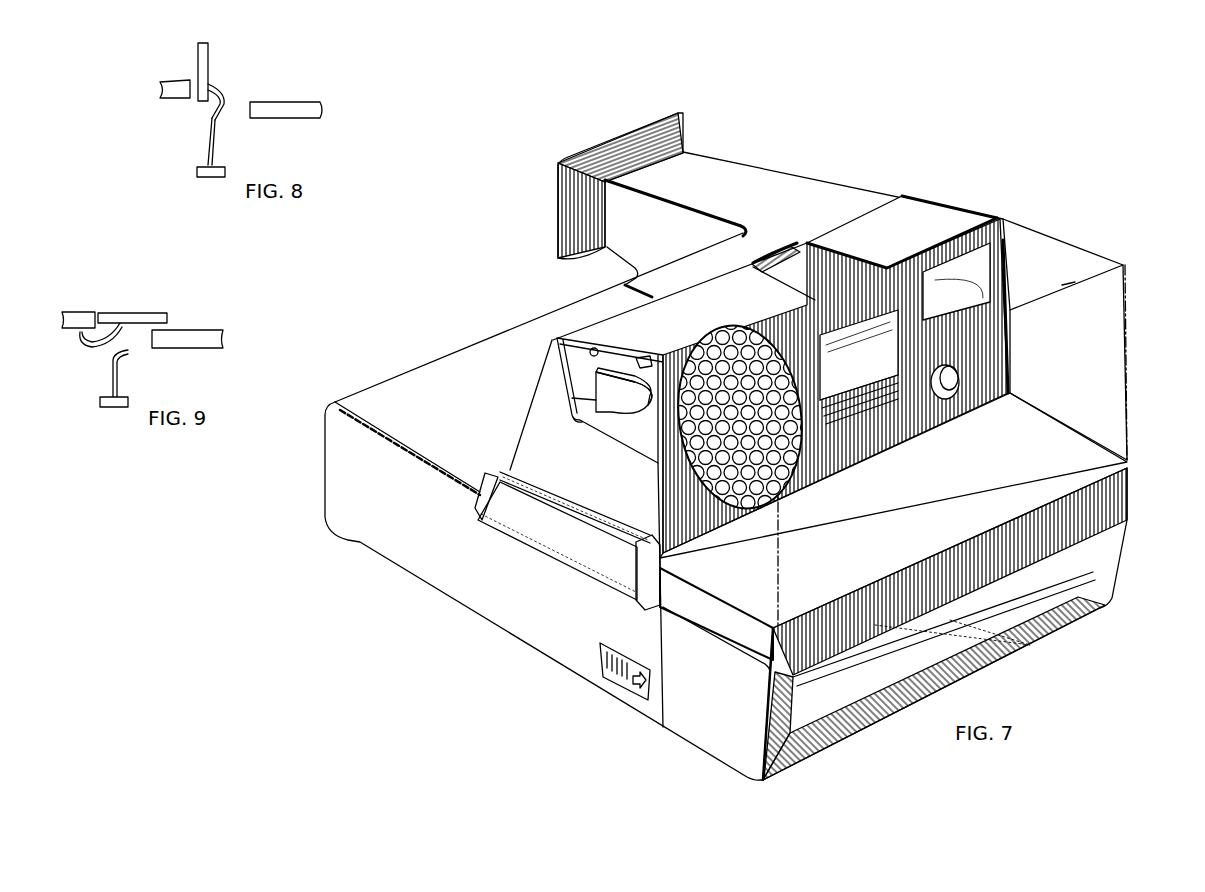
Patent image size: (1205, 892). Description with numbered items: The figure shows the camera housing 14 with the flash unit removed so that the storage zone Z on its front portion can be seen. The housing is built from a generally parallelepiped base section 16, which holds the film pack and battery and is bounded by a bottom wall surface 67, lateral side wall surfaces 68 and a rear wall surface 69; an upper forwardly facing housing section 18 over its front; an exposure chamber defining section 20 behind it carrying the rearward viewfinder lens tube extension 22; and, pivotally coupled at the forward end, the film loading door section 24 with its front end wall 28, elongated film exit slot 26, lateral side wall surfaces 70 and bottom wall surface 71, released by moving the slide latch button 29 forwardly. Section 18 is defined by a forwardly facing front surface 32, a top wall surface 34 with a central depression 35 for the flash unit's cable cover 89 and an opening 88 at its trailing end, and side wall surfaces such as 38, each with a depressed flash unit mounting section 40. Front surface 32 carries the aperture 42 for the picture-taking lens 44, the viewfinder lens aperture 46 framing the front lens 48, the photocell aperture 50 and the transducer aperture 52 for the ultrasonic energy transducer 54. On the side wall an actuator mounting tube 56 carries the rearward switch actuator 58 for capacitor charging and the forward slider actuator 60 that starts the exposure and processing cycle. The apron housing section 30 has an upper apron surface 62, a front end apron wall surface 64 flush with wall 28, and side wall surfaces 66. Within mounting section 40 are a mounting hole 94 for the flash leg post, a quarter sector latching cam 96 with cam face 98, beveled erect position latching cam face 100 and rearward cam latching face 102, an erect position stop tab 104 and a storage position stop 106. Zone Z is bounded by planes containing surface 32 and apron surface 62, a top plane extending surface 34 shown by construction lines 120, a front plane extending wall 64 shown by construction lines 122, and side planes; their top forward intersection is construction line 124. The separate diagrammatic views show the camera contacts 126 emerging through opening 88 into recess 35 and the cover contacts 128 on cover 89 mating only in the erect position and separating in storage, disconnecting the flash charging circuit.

In FIG. 7, the camera housing 14 is at (880, 188).
In FIG. 7, the base section 16 is at (418, 585).
In FIG. 7, the upper forwardly facing housing section 18 is at (1005, 220).
In FIG. 7, the exposure chamber defining section 20 is at (620, 304).
In FIG. 7, the viewfinder lens tube extension 22 is at (733, 180).
In FIG. 7, the film loading door and processing roller mounting housing section 24 is at (711, 777).
In FIG. 7, the film exit slot 26 is at (1083, 590).
In FIG. 7, the front end wall 28 is at (795, 760).
In FIG. 7, the slide latch button 29 is at (625, 688).
In FIG. 7, the apron housing section 30 is at (1130, 463).
In FIG. 7, the front surface 32 is at (893, 262).
In FIG. 8, the top wall surface 34 is at (159, 84).
In FIG. 9, the top wall surface 34 is at (62, 312).
In FIG. 7, the top wall surface 34 is at (906, 196).
In FIG. 8, the depression 35 is at (300, 93).
In FIG. 9, the depression 35 is at (195, 322).
In FIG. 7, the depression 35 is at (826, 272).
In FIG. 7, the side wall surface 38 is at (1010, 340).
In FIG. 7, the flash unit mounting section 40 is at (614, 341).
In FIG. 7, the aperture 42 is at (893, 375).
In FIG. 7, the picture-taking lens 44 is at (857, 337).
In FIG. 7, the viewfinder lens aperture 46 is at (993, 272).
In FIG. 7, the front lens 48 is at (902, 232).
In FIG. 7, the photocell aperture 50 is at (960, 388).
In FIG. 7, the transducer aperture 52 is at (762, 430).
In FIG. 7, the ultrasonic energy transducer 54 is at (735, 505).
In FIG. 7, the actuator mounting tube 56 is at (530, 520).
In FIG. 7, the switch actuator 58 is at (486, 478).
In FIG. 7, the slider actuator 60 is at (657, 588).
In FIG. 7, the upper apron surface 62 is at (1035, 425).
In FIG. 7, the front end apron wall surface 64 is at (1127, 488).
In FIG. 7, the side wall surface 66 is at (715, 628).
In FIG. 7, the bottom wall surface 67 is at (380, 558).
In FIG. 7, the lateral side wall surface 68 is at (482, 600).
In FIG. 7, the rear wall surface 69 is at (325, 456).
In FIG. 7, the lateral side wall surface 70 is at (686, 722).
In FIG. 7, the bottom wall surface 71 is at (762, 780).
In FIG. 7, the opening 88 is at (752, 270).
In FIG. 8, the cable cover element 89 is at (198, 66).
In FIG. 9, the cable cover element 89 is at (146, 313).
In FIG. 7, the mounting hole 94 is at (550, 358).
In FIG. 7, the latching cam 96 is at (628, 420).
In FIG. 7, the cam face 98 is at (607, 412).
In FIG. 7, the erect position latching cam face 100 is at (628, 368).
In FIG. 7, the cam latching face 102 is at (582, 398).
In FIG. 7, the erect position stop tab 104 is at (650, 358).
In FIG. 7, the storage position stop 106 is at (578, 418).
In FIG. 7, the construction lines 120 is at (1084, 260).
In FIG. 7, the construction lines 122 is at (1128, 326).
In FIG. 7, the construction line 124 is at (1075, 282).
In FIG. 8, the contacts 126 is at (213, 152).
In FIG. 9, the contacts 126 is at (117, 380).
In FIG. 8, the contacts 128 is at (222, 104).
In FIG. 9, the contacts 128 is at (82, 340).
In FIG. 7, the storage zone Z is at (1010, 305).